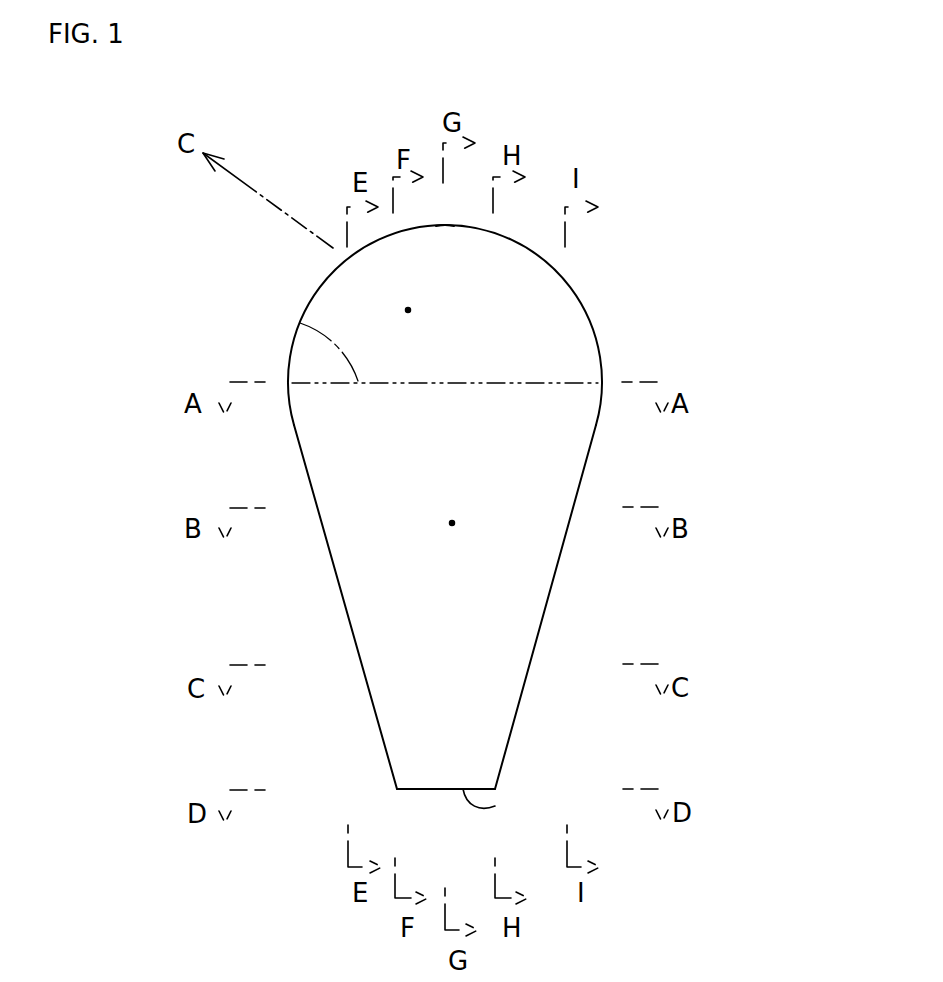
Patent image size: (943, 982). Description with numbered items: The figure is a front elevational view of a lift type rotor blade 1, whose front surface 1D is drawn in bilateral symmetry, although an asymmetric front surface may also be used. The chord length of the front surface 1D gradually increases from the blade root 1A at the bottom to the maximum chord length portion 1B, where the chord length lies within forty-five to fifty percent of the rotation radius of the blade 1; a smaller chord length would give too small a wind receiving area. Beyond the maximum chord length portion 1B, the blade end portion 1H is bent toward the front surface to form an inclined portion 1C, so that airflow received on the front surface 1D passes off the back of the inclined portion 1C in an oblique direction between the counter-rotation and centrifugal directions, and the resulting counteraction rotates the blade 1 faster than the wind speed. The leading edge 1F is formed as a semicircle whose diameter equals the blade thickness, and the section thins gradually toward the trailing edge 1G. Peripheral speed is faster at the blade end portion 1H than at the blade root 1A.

The rotor blade 1 is at (465, 507).
The blade root 1A is at (495, 806).
The maximum chord length portion 1B is at (300, 323).
The inclined portion 1C is at (408, 310).
The front surface 1D is at (452, 523).
The leading edge 1F is at (588, 457).
The trailing edge 1G is at (302, 460).
The blade end portion 1H is at (442, 225).